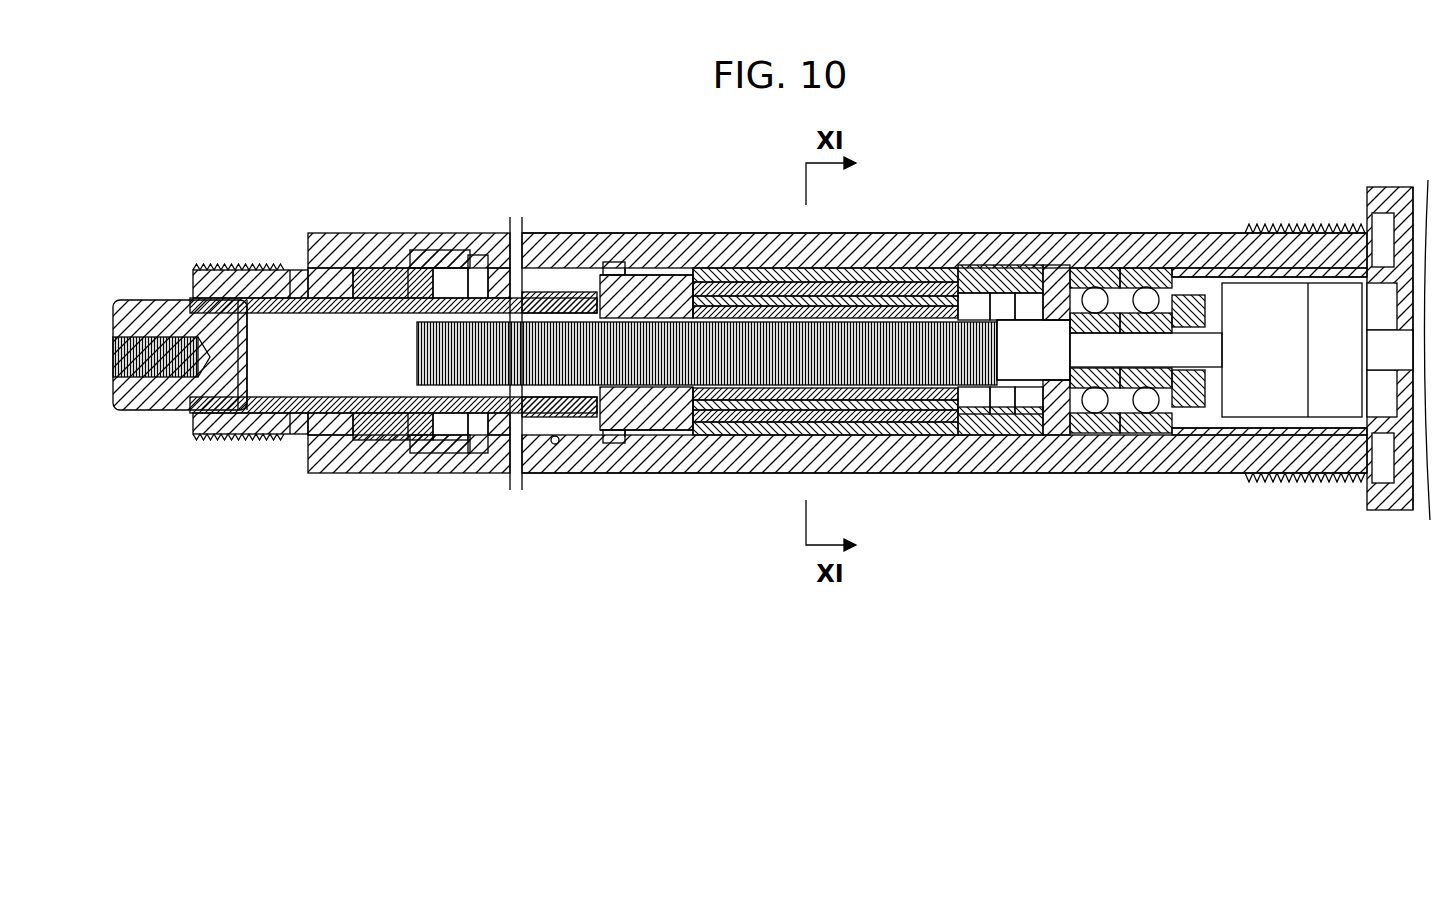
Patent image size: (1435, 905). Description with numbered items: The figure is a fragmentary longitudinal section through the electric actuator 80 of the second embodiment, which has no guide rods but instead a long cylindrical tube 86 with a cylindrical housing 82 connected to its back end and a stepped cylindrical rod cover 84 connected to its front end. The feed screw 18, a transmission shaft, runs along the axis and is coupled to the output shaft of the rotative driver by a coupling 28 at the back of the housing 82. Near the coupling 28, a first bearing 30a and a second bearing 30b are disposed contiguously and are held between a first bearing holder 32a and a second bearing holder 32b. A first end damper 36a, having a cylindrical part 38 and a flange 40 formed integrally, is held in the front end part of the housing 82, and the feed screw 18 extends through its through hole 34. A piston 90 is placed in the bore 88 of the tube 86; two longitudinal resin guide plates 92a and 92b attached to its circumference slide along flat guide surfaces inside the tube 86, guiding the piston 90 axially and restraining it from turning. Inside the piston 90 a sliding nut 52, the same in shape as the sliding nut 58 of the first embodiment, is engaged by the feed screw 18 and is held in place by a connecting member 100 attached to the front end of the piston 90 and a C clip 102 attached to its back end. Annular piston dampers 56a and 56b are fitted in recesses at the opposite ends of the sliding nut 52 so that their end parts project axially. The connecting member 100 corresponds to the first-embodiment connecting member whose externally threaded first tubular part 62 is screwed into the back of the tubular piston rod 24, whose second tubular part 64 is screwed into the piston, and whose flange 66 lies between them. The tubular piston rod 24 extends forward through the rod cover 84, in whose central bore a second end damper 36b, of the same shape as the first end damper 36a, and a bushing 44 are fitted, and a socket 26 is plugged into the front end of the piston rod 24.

The feed screw 18 is at (672, 400).
The tubular piston rod 24 is at (270, 436).
The socket 26 is at (160, 303).
The coupling 28 is at (1268, 282).
The first bearing 30a is at (1092, 287).
The second bearing 30b is at (1146, 288).
The first bearing holder 32a is at (1060, 436).
The second bearing holder 32b is at (1190, 408).
The through hole 34 is at (402, 441).
The first end damper 36a is at (1012, 262).
The second end damper 36b is at (432, 265).
The cylindrical part 38 is at (435, 441).
The flange 40 is at (372, 441).
The bushing 44 is at (340, 441).
The sliding nut 52 is at (852, 296).
The piston damper 56a is at (716, 268).
The piston damper 56b is at (930, 306).
The sliding nut 58 is at (612, 430).
The first tubular part 62 is at (570, 292).
The second tubular part 64 is at (650, 290).
The flange 66 is at (608, 268).
The electric actuator 80 is at (1004, 129).
The cylindrical housing 82 is at (1184, 233).
The stepped cylindrical rod cover 84 is at (338, 234).
The cylindrical tube 86 is at (672, 228).
The bore 88 is at (556, 444).
The piston 90 is at (742, 436).
The guide plate 92a is at (895, 282).
The guide plate 92b is at (878, 436).
The connecting member 100 is at (656, 430).
The C clip 102 is at (942, 438).